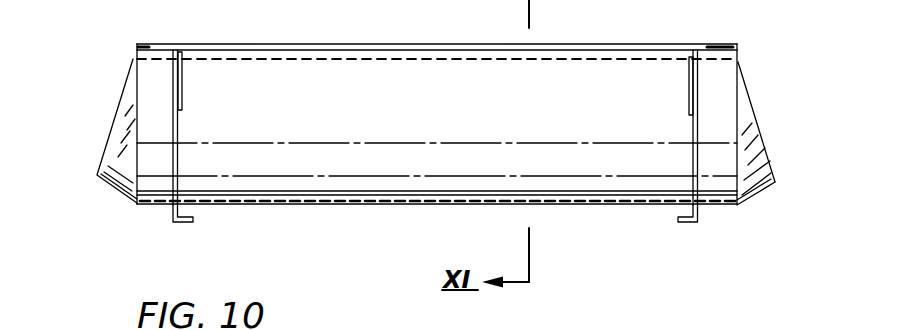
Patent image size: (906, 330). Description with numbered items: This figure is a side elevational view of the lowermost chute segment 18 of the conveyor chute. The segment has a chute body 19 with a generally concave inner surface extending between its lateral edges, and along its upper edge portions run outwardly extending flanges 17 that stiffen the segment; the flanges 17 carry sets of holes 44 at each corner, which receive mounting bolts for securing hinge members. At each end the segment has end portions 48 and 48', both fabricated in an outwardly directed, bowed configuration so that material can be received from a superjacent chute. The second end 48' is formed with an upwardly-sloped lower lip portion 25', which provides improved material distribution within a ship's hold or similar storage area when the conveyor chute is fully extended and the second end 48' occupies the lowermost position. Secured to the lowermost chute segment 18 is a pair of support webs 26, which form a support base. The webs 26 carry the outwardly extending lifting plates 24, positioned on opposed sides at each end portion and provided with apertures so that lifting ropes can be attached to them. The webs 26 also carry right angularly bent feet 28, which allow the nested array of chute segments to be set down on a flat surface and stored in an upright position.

The outwardly extending flanges 17 is at (400, 44).
The lowermost chute segment 18 is at (378, 211).
The chute body 19 is at (453, 207).
The lifting plates 24 is at (182, 98).
The lower lip portion 25' is at (775, 210).
The support webs 26 is at (180, 137).
The feet 28 is at (192, 219).
The holes 44 is at (170, 45).
The first end portion 48 is at (92, 131).
The second end portion 48' is at (786, 128).